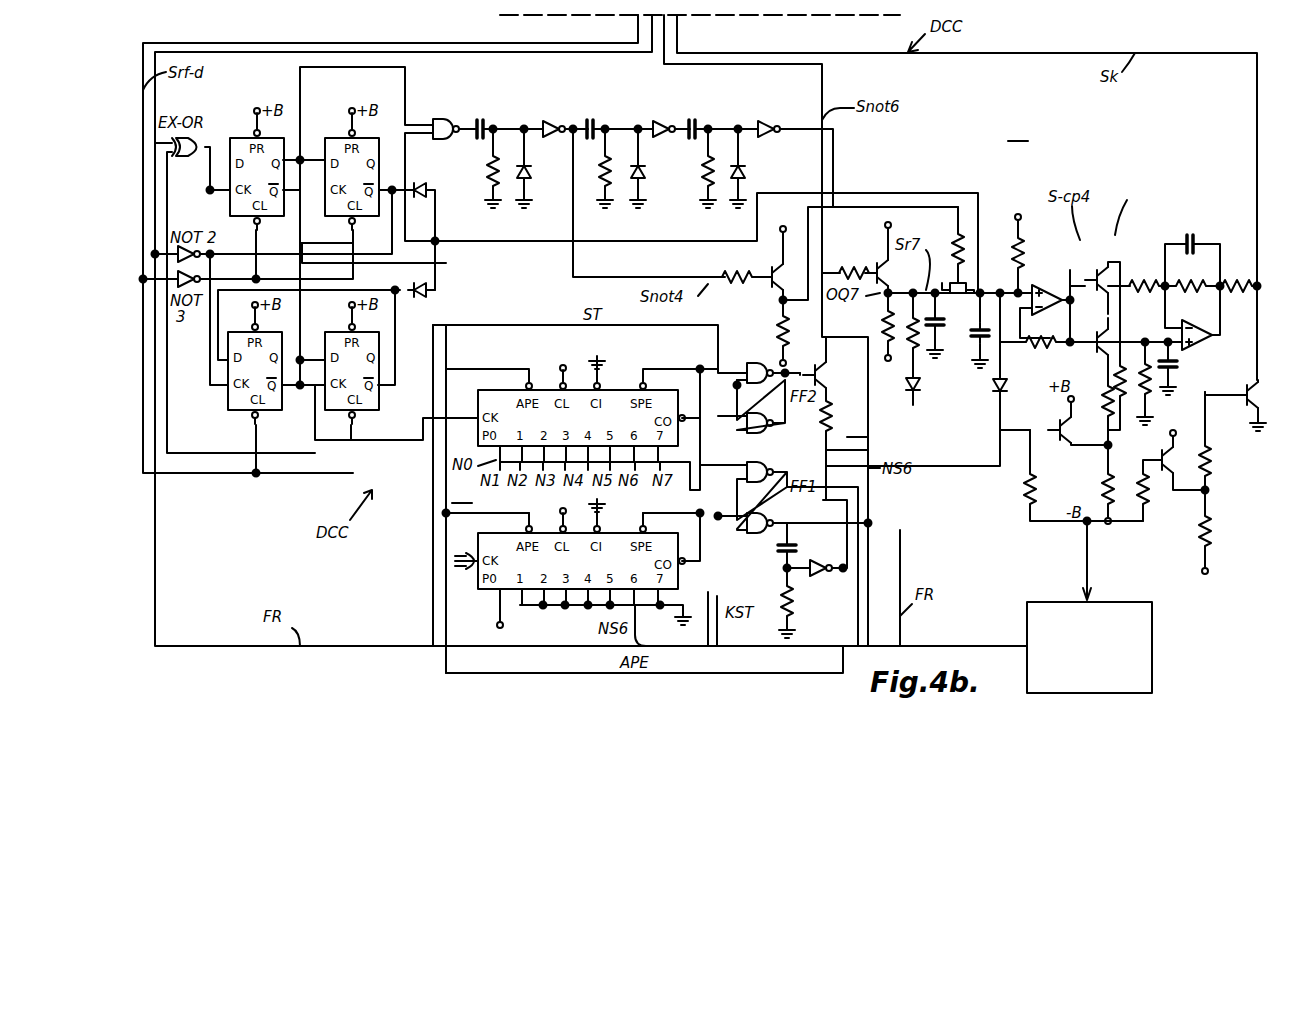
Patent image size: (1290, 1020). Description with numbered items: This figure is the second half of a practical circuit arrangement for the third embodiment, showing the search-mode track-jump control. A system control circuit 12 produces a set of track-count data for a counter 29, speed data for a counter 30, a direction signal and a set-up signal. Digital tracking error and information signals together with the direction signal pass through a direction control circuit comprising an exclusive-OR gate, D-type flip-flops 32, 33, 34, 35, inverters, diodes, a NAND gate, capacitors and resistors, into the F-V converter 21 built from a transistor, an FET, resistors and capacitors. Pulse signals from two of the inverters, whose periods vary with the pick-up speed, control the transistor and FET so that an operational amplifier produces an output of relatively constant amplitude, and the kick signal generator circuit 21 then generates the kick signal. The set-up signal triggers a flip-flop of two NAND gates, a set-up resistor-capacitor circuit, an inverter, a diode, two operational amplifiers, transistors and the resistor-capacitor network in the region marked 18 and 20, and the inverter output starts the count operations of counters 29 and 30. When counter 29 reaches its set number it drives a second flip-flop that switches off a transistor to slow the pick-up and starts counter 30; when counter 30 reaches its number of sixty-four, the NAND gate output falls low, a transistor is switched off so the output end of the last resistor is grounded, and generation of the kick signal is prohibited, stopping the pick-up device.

The system control circuit 12 is at (1152, 622).
The amplifier circuit 18 is at (1129, 208).
The counter circuit 20 is at (462, 495).
The kick signal generator circuit 21 is at (1018, 133).
The counter 29 is at (660, 385).
The counter 30 is at (478, 598).
The D-type flip-flop 32 is at (228, 198).
The D-type flip-flop 33 is at (325, 130).
The D-type flip-flop 34 is at (226, 400).
The D-type flip-flop 35 is at (379, 402).